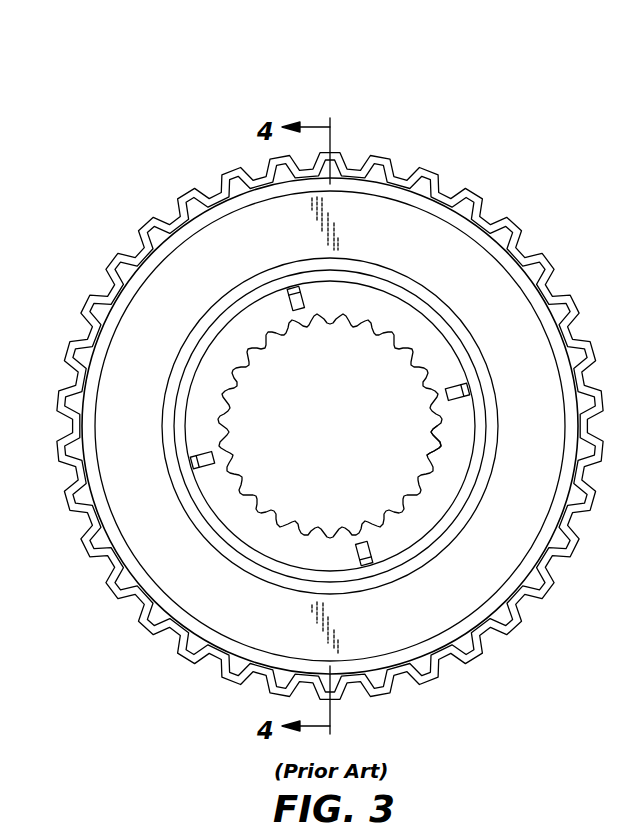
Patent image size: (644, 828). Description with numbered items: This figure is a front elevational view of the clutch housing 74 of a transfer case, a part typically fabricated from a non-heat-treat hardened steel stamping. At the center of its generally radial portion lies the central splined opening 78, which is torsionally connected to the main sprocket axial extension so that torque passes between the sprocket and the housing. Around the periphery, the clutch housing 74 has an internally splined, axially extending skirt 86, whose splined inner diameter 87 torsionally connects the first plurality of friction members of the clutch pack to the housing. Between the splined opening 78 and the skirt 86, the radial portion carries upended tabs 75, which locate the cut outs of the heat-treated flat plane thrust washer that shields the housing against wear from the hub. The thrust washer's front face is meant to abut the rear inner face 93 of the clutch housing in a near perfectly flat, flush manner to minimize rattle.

The clutch housing 74 is at (230, 132).
The upended tabs 75 is at (464, 388).
The central splined opening 78 is at (256, 492).
The skirt 86 is at (117, 259).
The splined inner diameter 87 is at (151, 236).
The rear inner face 93 is at (448, 482).